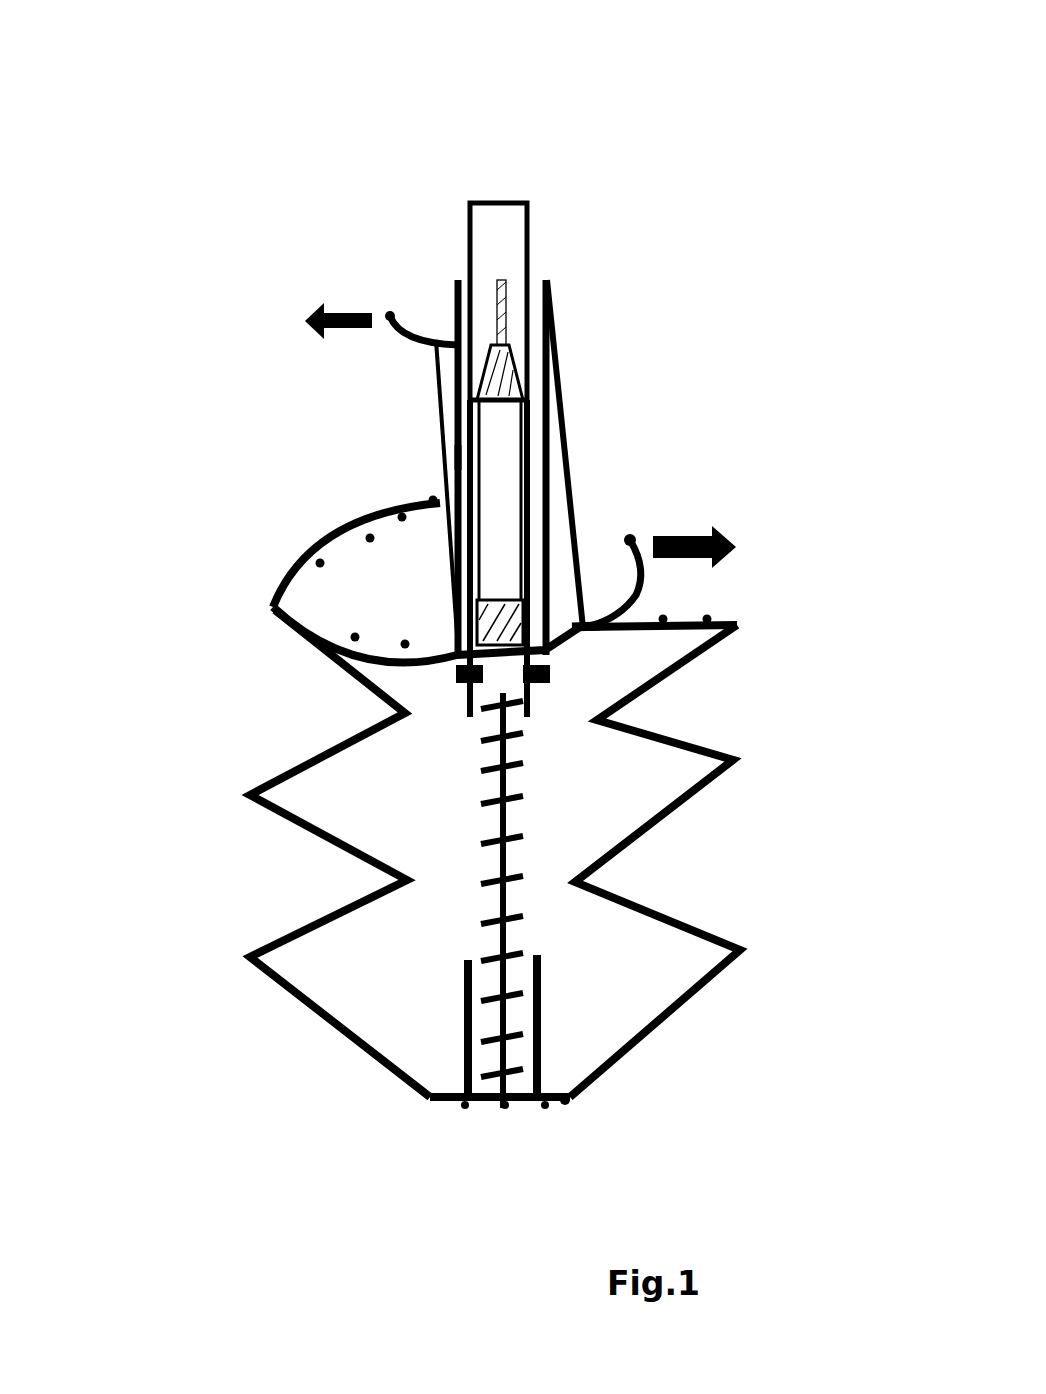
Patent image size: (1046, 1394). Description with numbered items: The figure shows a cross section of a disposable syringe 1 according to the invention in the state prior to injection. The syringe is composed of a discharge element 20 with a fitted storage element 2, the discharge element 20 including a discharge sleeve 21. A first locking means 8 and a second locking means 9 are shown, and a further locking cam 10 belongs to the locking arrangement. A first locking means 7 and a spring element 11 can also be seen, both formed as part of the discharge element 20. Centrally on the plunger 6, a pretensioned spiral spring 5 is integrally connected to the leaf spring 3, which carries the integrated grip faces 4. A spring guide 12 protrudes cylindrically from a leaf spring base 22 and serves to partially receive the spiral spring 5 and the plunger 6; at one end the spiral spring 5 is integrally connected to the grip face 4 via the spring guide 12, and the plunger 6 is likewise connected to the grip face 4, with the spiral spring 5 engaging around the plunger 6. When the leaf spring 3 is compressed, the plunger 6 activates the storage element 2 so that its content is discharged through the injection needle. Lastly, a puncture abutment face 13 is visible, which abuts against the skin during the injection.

The disposable syringe 1 is at (620, 266).
The storage element 2 is at (532, 198).
The leaf spring 3 is at (667, 823).
The grip faces 4 is at (307, 568).
The spiral spring 5 is at (477, 877).
The plunger 6 is at (497, 783).
The first locking means 7 is at (593, 630).
The locking cam 8 is at (632, 522).
The second locking means 9 is at (307, 323).
The further locking cam 10 is at (460, 325).
The spring element 11 is at (562, 455).
The spring guide 12 is at (463, 1012).
The puncture abutment face 13 is at (543, 277).
The discharge element 20 is at (560, 385).
The discharge sleeve 21 is at (455, 455).
The leaf spring base 22 is at (563, 1100).